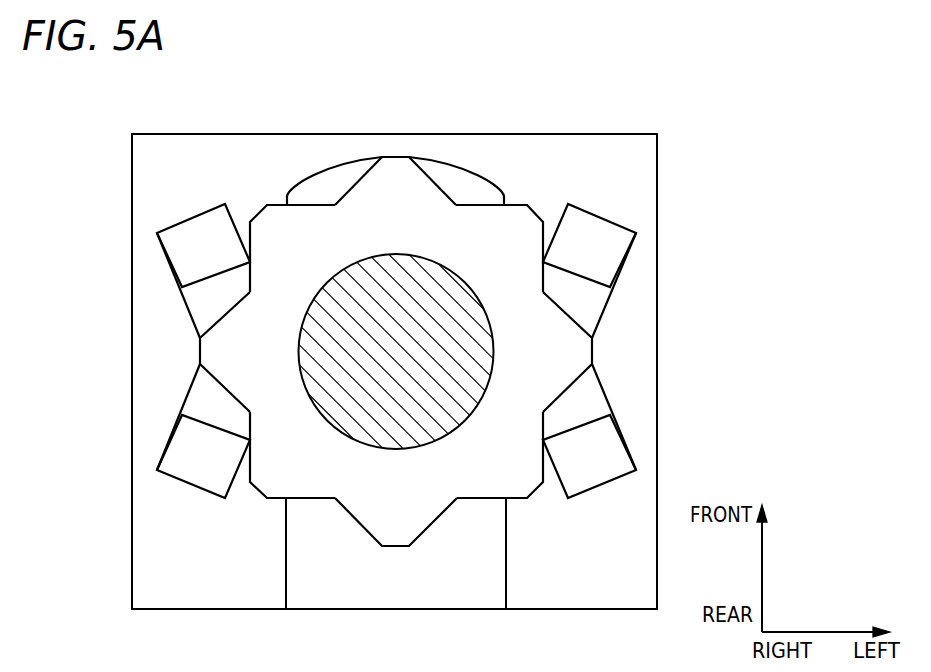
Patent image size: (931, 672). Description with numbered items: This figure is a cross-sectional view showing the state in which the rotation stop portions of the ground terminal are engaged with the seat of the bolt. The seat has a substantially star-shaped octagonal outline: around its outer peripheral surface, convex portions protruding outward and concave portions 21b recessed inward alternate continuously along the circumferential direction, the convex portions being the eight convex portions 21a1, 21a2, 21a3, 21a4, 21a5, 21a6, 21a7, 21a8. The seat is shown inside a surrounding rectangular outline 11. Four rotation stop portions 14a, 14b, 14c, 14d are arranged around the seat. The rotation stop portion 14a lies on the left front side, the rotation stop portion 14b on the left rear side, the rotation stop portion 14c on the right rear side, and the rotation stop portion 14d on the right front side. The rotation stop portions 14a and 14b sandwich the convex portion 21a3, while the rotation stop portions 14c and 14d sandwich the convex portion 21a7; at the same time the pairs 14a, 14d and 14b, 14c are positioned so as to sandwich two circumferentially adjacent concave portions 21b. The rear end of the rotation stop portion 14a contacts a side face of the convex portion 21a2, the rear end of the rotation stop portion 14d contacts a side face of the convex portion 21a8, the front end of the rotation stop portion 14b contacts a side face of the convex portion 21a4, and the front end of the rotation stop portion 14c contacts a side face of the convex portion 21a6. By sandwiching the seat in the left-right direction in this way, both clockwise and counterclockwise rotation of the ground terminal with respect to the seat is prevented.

The housing 11 is at (482, 562).
The rotation stop portion 14a is at (602, 252).
The rotation stop portion 14b is at (612, 460).
The rotation stop portion 14c is at (180, 458).
The rotation stop portion 14d is at (175, 243).
The convex portion 21a1 is at (397, 165).
The convex portion 21a2 is at (535, 213).
The convex portion 21a3 is at (580, 352).
The convex portion 21a4 is at (535, 492).
The convex portion 21a5 is at (397, 548).
The convex portion 21a6 is at (257, 490).
The convex portion 21a7 is at (200, 350).
The convex portion 21a8 is at (258, 212).
The concave portion 21b is at (488, 202).